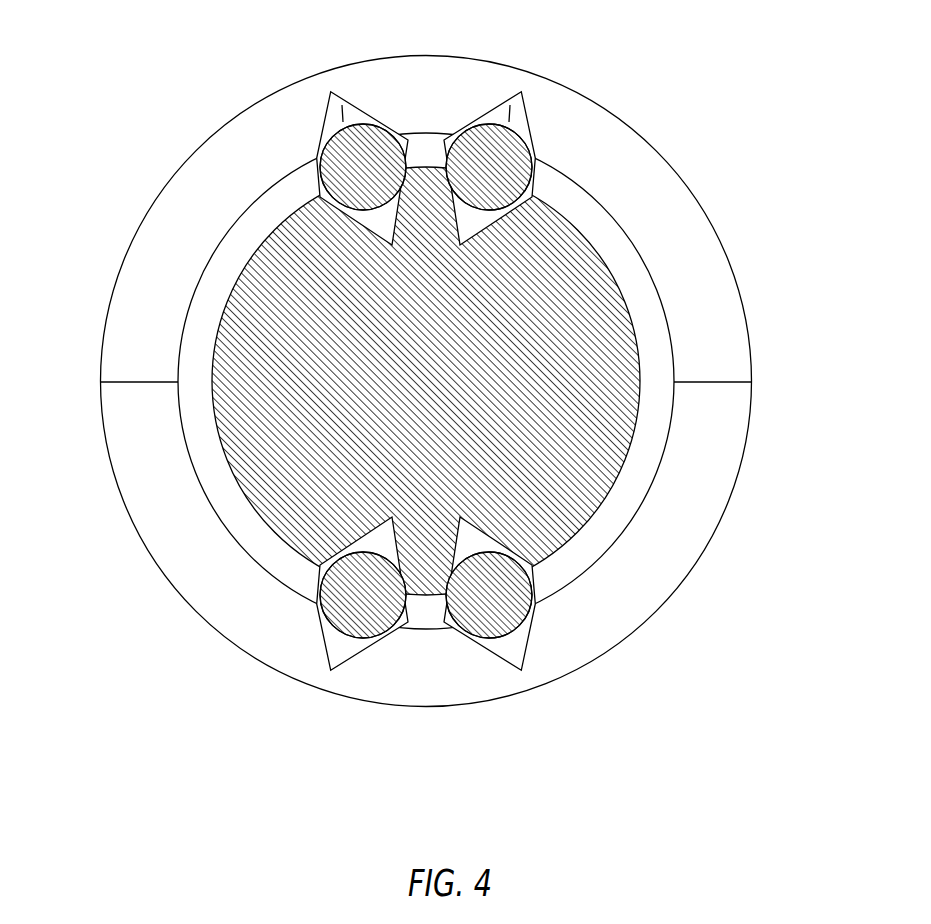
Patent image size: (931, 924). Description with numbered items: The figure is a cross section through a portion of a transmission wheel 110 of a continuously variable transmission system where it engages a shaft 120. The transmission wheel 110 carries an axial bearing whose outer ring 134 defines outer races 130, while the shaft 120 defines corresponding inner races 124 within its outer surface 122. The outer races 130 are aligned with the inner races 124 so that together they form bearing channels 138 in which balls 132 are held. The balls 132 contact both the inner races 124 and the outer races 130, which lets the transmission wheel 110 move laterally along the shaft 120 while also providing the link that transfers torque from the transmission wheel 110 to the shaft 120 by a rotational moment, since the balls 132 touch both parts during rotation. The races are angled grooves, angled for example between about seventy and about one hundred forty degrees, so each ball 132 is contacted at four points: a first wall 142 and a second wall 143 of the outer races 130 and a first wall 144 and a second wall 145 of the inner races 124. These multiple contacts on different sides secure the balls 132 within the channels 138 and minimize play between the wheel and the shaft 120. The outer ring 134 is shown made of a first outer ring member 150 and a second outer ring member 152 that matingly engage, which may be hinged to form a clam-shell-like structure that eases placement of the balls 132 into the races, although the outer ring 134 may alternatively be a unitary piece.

The transmission wheel 110 is at (681, 758).
The shaft 120 is at (642, 370).
The outer surface of shaft 122 is at (222, 393).
The inner races 124 is at (350, 255).
The outer races 130 is at (503, 96).
The balls 132 is at (537, 590).
The outer ring 134 is at (640, 128).
The bearing channels 138 is at (310, 155).
The first wall of outer race 142 is at (331, 91).
The second wall of outer race 143 is at (372, 107).
The first wall of inner race 144 is at (540, 200).
The second wall of inner race 145 is at (520, 258).
The first outer ring member 150 is at (700, 290).
The second outer ring member 152 is at (160, 487).